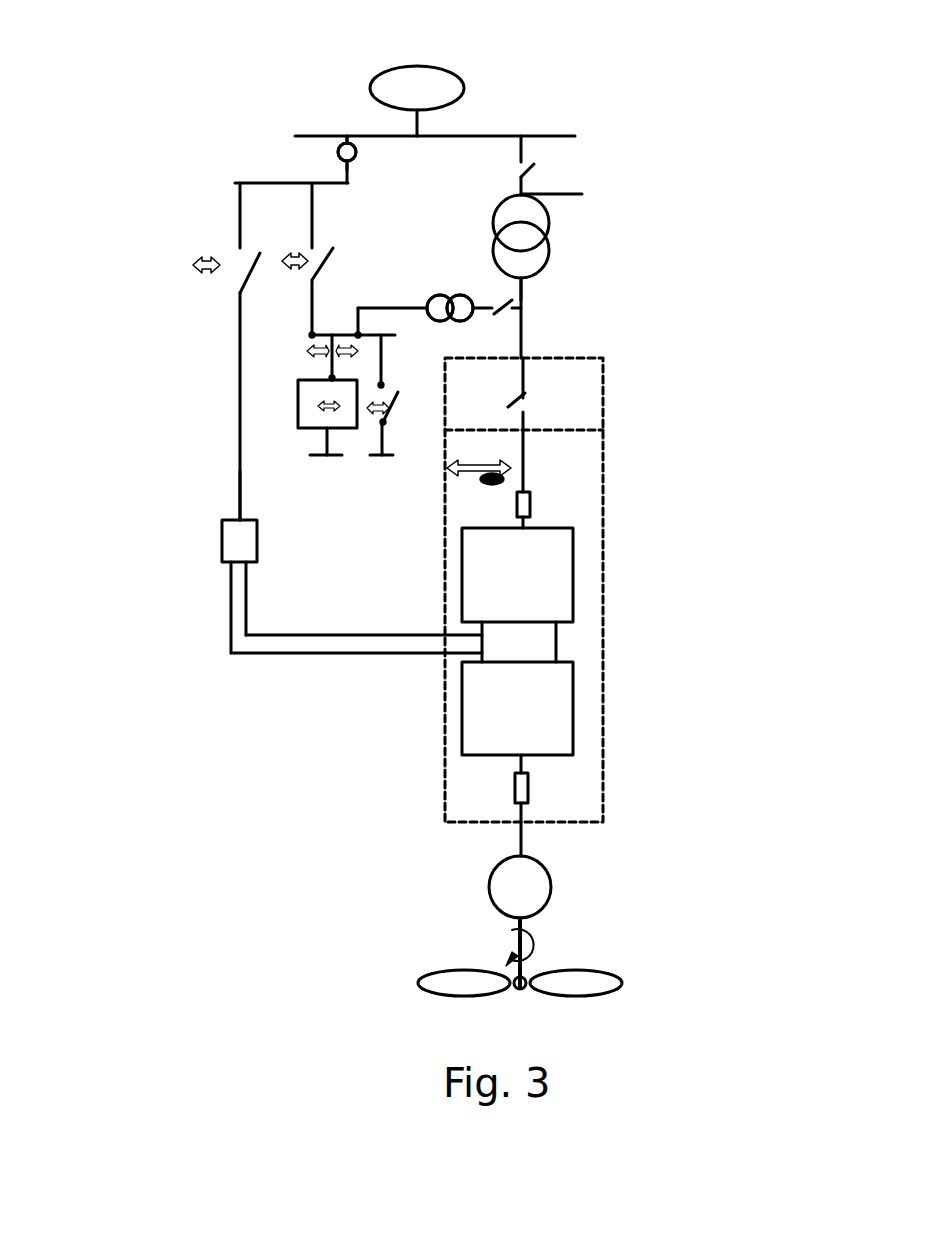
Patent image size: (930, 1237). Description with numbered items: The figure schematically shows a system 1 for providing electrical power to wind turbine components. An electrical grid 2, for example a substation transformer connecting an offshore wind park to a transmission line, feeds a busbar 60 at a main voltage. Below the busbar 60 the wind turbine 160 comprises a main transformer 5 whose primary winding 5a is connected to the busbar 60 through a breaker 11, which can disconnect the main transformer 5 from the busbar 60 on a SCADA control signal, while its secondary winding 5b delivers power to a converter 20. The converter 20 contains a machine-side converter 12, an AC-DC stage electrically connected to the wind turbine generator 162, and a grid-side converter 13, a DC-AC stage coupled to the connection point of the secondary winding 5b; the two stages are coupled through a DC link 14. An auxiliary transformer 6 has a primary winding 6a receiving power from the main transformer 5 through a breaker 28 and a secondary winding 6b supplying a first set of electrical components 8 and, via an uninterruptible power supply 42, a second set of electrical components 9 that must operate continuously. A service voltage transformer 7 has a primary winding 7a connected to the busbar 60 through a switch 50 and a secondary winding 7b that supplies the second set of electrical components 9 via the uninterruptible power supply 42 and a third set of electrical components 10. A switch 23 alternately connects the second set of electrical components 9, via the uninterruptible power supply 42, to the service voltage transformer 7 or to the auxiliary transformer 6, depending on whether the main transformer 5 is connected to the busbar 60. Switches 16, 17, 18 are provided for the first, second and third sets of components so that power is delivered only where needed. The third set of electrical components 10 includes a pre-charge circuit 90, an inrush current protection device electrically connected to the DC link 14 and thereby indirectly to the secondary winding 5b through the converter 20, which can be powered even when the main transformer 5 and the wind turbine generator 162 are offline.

The system 1 is at (652, 110).
The electrical grid 2 is at (430, 66).
The main transformer 5 is at (565, 240).
The primary winding 5a is at (572, 195).
The secondary winding 5b is at (528, 270).
The auxiliary transformer 6 is at (440, 282).
The primary winding 6a is at (465, 300).
The secondary winding 6b is at (428, 305).
The service voltage transformer 7 is at (366, 161).
The primary winding 7a is at (348, 137).
The secondary winding 7b is at (342, 170).
The first set of electrical components 8 is at (382, 455).
The second set of electrical components 9 is at (326, 455).
The third set of electrical components 10 is at (222, 547).
The breaker 11 is at (535, 170).
The machine-side converter 12 is at (577, 703).
The grid-side converter 13 is at (567, 555).
The DC link 14 is at (482, 653).
The switch 16 is at (385, 420).
The switch 17 is at (320, 255).
The switch 18 is at (245, 275).
The converter 20 is at (615, 603).
The switch 23 is at (332, 376).
The breaker 28 is at (500, 300).
The uninterruptible power supply 42 is at (300, 428).
The switch 50 is at (348, 135).
The busbar 60 is at (492, 135).
The pre-charge circuit 90 is at (222, 537).
The wind turbine 160 is at (587, 973).
The wind turbine generator 162 is at (553, 887).